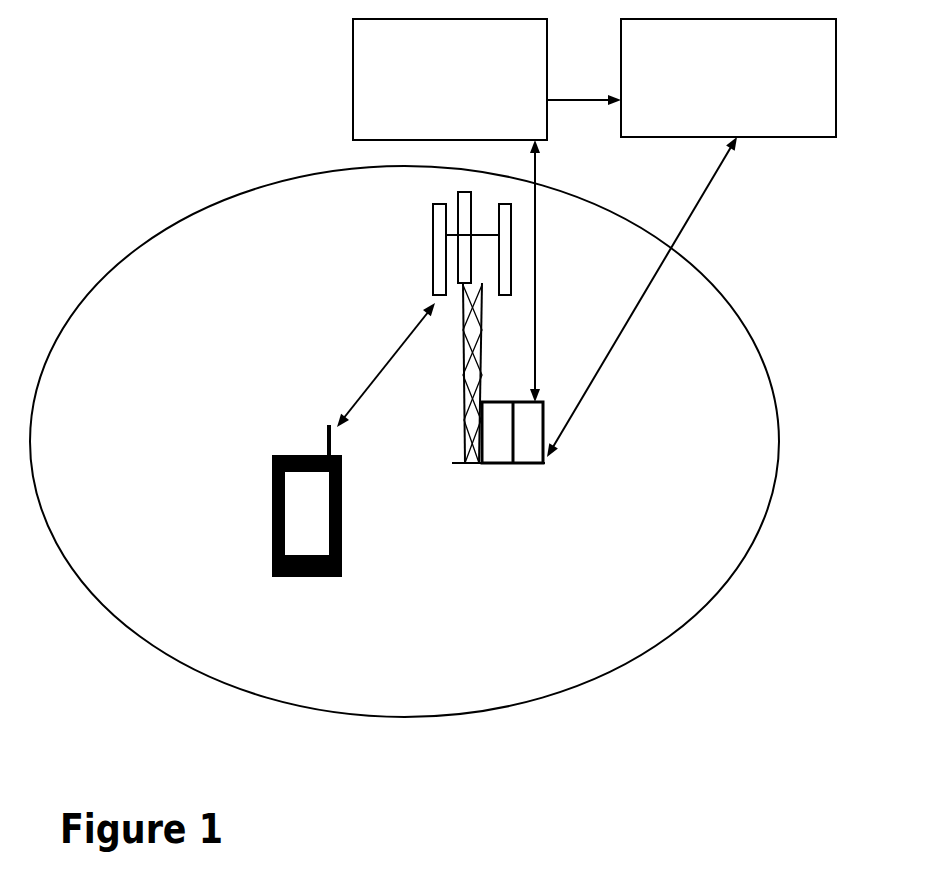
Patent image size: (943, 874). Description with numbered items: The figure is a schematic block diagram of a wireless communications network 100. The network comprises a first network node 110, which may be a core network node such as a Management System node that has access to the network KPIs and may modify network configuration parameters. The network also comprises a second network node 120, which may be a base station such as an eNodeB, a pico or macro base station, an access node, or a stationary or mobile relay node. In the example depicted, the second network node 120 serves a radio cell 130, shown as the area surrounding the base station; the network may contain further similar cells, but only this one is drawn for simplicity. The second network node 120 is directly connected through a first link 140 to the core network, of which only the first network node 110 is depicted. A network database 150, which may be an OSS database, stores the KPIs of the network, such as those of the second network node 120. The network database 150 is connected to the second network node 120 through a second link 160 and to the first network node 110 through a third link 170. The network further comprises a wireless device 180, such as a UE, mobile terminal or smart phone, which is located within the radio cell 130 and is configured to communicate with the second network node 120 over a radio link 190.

The wireless communications network 100 is at (818, 646).
The first network node 110 is at (728, 78).
The second network node 120 is at (477, 465).
The radio cell 130 is at (225, 685).
The first link 140 is at (617, 343).
The network database 150 is at (450, 79).
The second link 160 is at (535, 233).
The third link 170 is at (562, 103).
The wireless device 180 is at (322, 577).
The radio link 190 is at (388, 362).